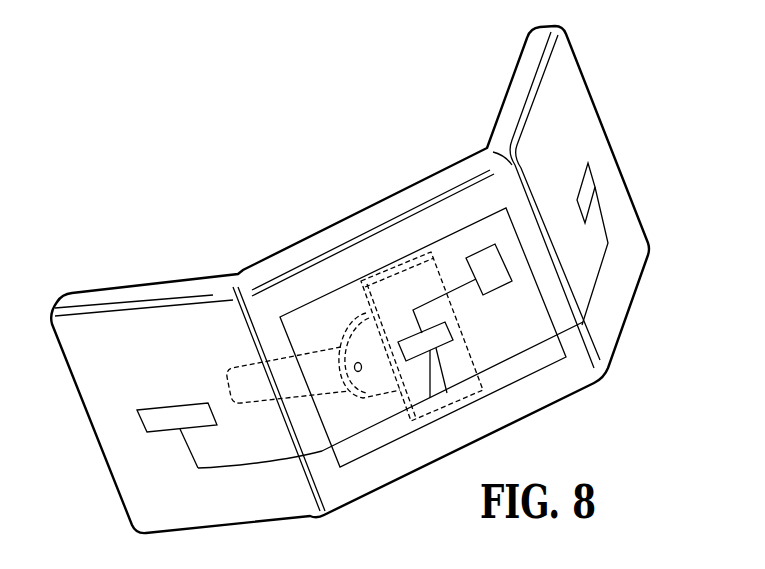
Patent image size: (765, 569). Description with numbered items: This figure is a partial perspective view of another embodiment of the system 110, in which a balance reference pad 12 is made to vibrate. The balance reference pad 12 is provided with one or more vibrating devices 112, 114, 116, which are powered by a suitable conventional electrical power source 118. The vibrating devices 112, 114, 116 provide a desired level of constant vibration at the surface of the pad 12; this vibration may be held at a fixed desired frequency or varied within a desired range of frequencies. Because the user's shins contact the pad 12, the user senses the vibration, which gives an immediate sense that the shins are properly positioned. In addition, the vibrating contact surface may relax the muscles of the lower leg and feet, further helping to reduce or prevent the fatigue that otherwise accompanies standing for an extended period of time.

The system 110 is at (371, 279).
The balance reference pad 12 is at (386, 193).
The vibrating device 112 is at (172, 421).
The vibrating device 114 is at (433, 338).
The vibrating device 116 is at (590, 192).
The electrical power source 118 is at (489, 268).